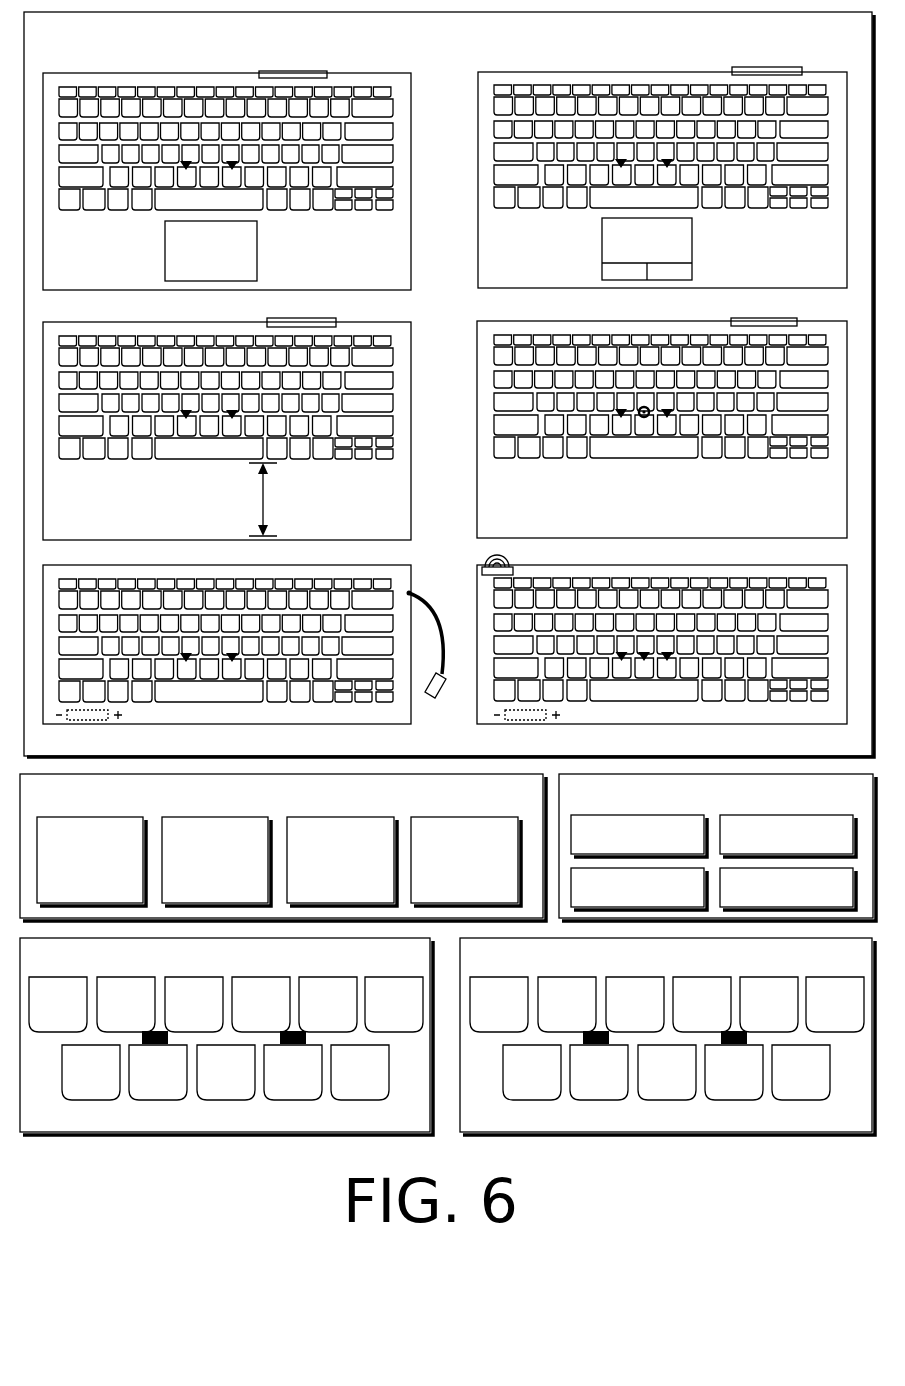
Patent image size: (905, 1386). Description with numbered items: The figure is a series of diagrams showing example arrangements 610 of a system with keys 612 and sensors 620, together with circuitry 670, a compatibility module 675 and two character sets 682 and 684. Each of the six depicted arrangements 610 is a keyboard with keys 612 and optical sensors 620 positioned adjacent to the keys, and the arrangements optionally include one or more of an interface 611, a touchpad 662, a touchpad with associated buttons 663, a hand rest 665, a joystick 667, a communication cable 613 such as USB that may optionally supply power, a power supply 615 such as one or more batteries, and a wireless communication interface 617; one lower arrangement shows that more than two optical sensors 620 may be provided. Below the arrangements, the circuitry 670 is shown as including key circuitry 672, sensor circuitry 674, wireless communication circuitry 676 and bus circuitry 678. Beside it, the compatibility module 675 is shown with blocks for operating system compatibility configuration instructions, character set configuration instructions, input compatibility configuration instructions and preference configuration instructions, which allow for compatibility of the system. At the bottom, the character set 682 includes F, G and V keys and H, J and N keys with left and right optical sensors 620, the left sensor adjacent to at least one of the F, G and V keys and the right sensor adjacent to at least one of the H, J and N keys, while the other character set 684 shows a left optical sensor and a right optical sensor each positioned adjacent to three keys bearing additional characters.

The arrangements 610 is at (449, 384).
The interface 611 is at (280, 72).
The keys 612 is at (443, 393).
The sensors 620 is at (667, 655).
The touchpad 662 is at (248, 257).
The touchpad with associated buttons 663 is at (679, 247).
The hand rest 665 is at (242, 499).
The joystick 667 is at (644, 418).
The communication cable 613 is at (441, 698).
The power supply 615 is at (84, 720).
The wireless communication interface 617 is at (488, 562).
The circuitry 670 is at (283, 847).
The key circuitry 672 is at (91, 861).
The sensor circuitry 674 is at (216, 861).
The wireless communication circuitry 676 is at (342, 861).
The bus circuitry 678 is at (466, 861).
The compatibility module 675 is at (717, 847).
The character set 682 is at (226, 1036).
The other character set 684 is at (667, 1036).